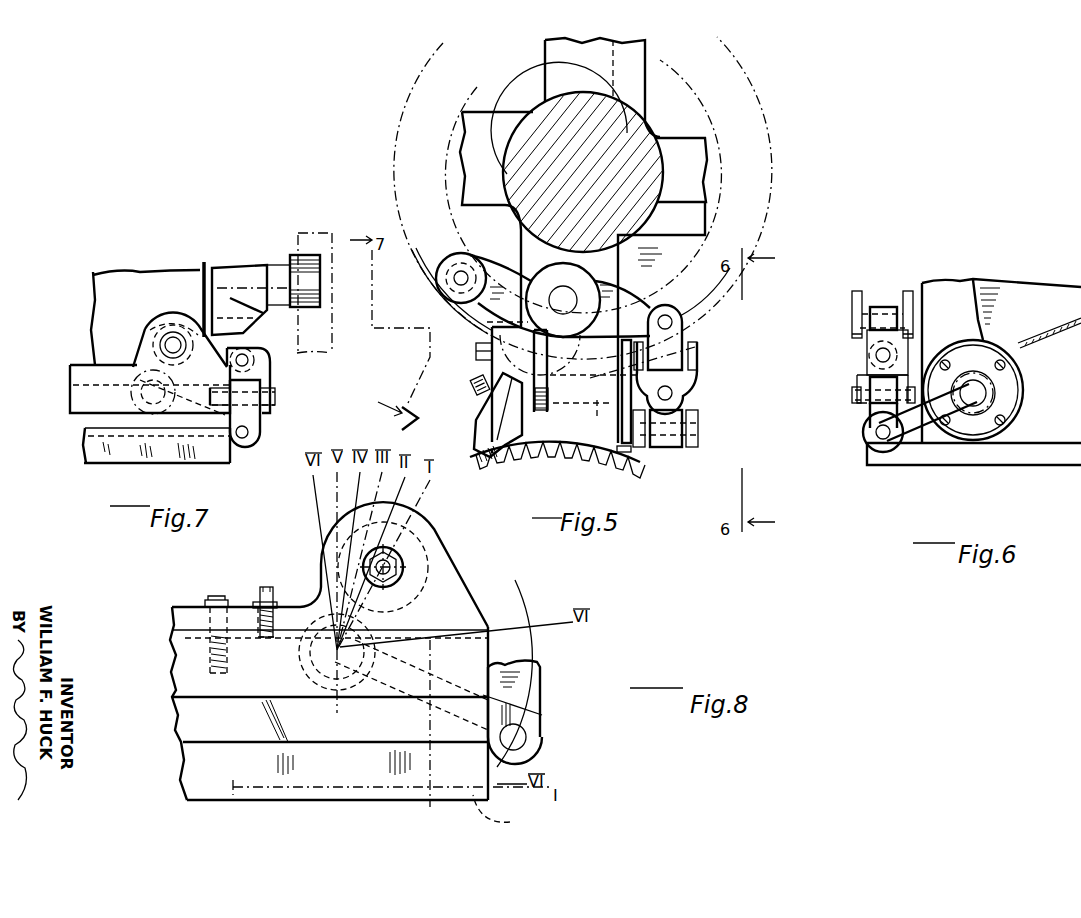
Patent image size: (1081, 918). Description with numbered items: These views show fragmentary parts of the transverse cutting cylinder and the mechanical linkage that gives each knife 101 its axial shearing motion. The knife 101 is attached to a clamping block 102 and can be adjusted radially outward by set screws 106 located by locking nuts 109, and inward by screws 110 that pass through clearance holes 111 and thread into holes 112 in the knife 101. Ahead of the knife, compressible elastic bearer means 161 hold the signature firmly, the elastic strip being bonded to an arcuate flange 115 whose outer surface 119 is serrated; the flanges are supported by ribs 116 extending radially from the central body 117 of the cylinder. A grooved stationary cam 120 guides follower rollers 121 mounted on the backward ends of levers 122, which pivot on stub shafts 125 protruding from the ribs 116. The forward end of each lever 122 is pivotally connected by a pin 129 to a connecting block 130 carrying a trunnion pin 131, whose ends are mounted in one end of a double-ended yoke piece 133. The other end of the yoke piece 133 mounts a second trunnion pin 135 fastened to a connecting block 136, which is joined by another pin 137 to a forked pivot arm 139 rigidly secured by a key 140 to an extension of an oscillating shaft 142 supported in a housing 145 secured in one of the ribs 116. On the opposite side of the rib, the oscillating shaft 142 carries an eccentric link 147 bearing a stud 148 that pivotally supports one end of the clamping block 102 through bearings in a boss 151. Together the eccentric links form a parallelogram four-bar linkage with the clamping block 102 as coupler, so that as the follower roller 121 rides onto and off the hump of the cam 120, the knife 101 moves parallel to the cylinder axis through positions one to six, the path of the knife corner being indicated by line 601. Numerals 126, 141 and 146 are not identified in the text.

In FIG. 5, the knife 101 is at (477, 443).
In FIG. 7, the knife 101 is at (96, 442).
In FIG. 8, the knife 101 is at (170, 658).
In FIG. 5, the clamping block 102 is at (480, 403).
In FIG. 7, the clamping block 102 is at (108, 364).
In FIG. 8, the clamping block 102 is at (172, 683).
In FIG. 8, the set screws 106 is at (273, 588).
In FIG. 8, the locking nuts 109 is at (277, 598).
In FIG. 8, the screws 110 is at (220, 600).
In FIG. 8, the clearance holes 111 is at (207, 606).
In FIG. 8, the holes 112 is at (228, 652).
In FIG. 5, the arcuate flange 115 is at (574, 453).
In FIG. 5, the ribs 116 is at (500, 117).
In FIG. 5, the central body 117 is at (633, 163).
In FIG. 5, the outer surface 119 is at (547, 470).
In FIG. 5, the stationary cam 120 is at (772, 180).
In FIG. 7, the stationary cam 120 is at (298, 235).
In FIG. 5, the follower rollers 121 is at (450, 262).
In FIG. 7, the follower rollers 121 is at (320, 307).
In FIG. 5, the levers 122 is at (652, 290).
In FIG. 7, the levers 122 is at (276, 264).
In FIG. 6, the levers 122 is at (907, 292).
In FIG. 5, the stub shafts 125 is at (568, 298).
In FIG. 7, the stub shafts 125 is at (245, 258).
In FIG. 7, the plate 126 is at (205, 280).
In FIG. 5, the pin 129 is at (672, 315).
In FIG. 6, the pin 129 is at (851, 315).
In FIG. 6, the connecting block 130 is at (875, 337).
In FIG. 5, the trunnion pin 131 is at (693, 366).
In FIG. 7, the trunnion pin 131 is at (252, 358).
In FIG. 6, the trunnion pin 131 is at (875, 355).
In FIG. 5, the yoke piece 133 is at (693, 383).
In FIG. 7, the yoke piece 133 is at (271, 368).
In FIG. 6, the yoke piece 133 is at (853, 378).
In FIG. 5, the second trunnion pin 135 is at (681, 397).
In FIG. 7, the second trunnion pin 135 is at (276, 398).
In FIG. 6, the second trunnion pin 135 is at (851, 395).
In FIG. 5, the connecting block 136 is at (672, 413).
In FIG. 7, the connecting block 136 is at (250, 408).
In FIG. 6, the connecting block 136 is at (878, 405).
In FIG. 8, the connecting block 136 is at (540, 681).
In FIG. 5, the pin 137 is at (694, 428).
In FIG. 7, the pin 137 is at (251, 440).
In FIG. 8, the pin 137 is at (520, 737).
In FIG. 5, the forked pivot arm 139 is at (687, 348).
In FIG. 7, the forked pivot arm 139 is at (237, 449).
In FIG. 6, the forked pivot arm 139 is at (888, 446).
In FIG. 8, the forked pivot arm 139 is at (530, 713).
In FIG. 6, the key 140 is at (975, 352).
In FIG. 6, the screws 141 is at (1010, 408).
In FIG. 5, the oscillating shaft 142 is at (600, 410).
In FIG. 6, the oscillating shaft 142 is at (1005, 388).
In FIG. 8, the oscillating shaft 142 is at (300, 670).
In FIG. 5, the housing 145 is at (623, 464).
In FIG. 6, the housing 145 is at (1008, 377).
In FIG. 5, the slot 146 is at (613, 363).
In FIG. 5, the eccentric link 147 is at (539, 395).
In FIG. 7, the eccentric link 147 is at (158, 323).
In FIG. 8, the eccentric link 147 is at (414, 582).
In FIG. 7, the stud 148 is at (165, 344).
In FIG. 8, the stud 148 is at (403, 557).
In FIG. 7, the boss 151 is at (179, 346).
In FIG. 8, the boss 151 is at (425, 513).
In FIG. 5, the bearer means 161 is at (481, 461).
In FIG. 8, the line 601 is at (508, 815).